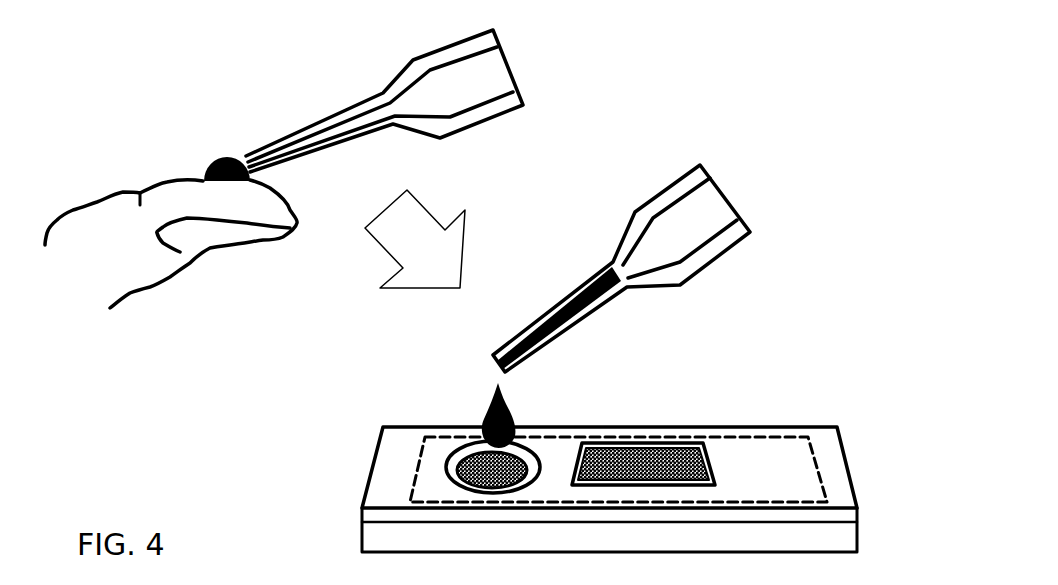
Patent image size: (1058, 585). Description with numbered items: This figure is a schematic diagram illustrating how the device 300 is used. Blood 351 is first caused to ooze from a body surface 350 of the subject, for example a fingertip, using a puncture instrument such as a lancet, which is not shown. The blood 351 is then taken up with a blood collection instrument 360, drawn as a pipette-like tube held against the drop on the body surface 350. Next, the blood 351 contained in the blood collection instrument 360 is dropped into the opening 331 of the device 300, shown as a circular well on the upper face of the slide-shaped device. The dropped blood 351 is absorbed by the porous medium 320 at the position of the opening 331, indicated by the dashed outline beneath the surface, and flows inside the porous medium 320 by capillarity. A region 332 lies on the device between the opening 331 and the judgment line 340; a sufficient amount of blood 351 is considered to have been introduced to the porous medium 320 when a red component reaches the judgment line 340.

The device 300 is at (830, 334).
The porous medium 320 is at (787, 443).
The opening 331 is at (526, 416).
The reaction region 332 is at (698, 413).
The judgment line 340 is at (650, 449).
The body surface 350 is at (147, 192).
The blood 351 is at (213, 152).
The blood collection instrument 360 is at (397, 80).